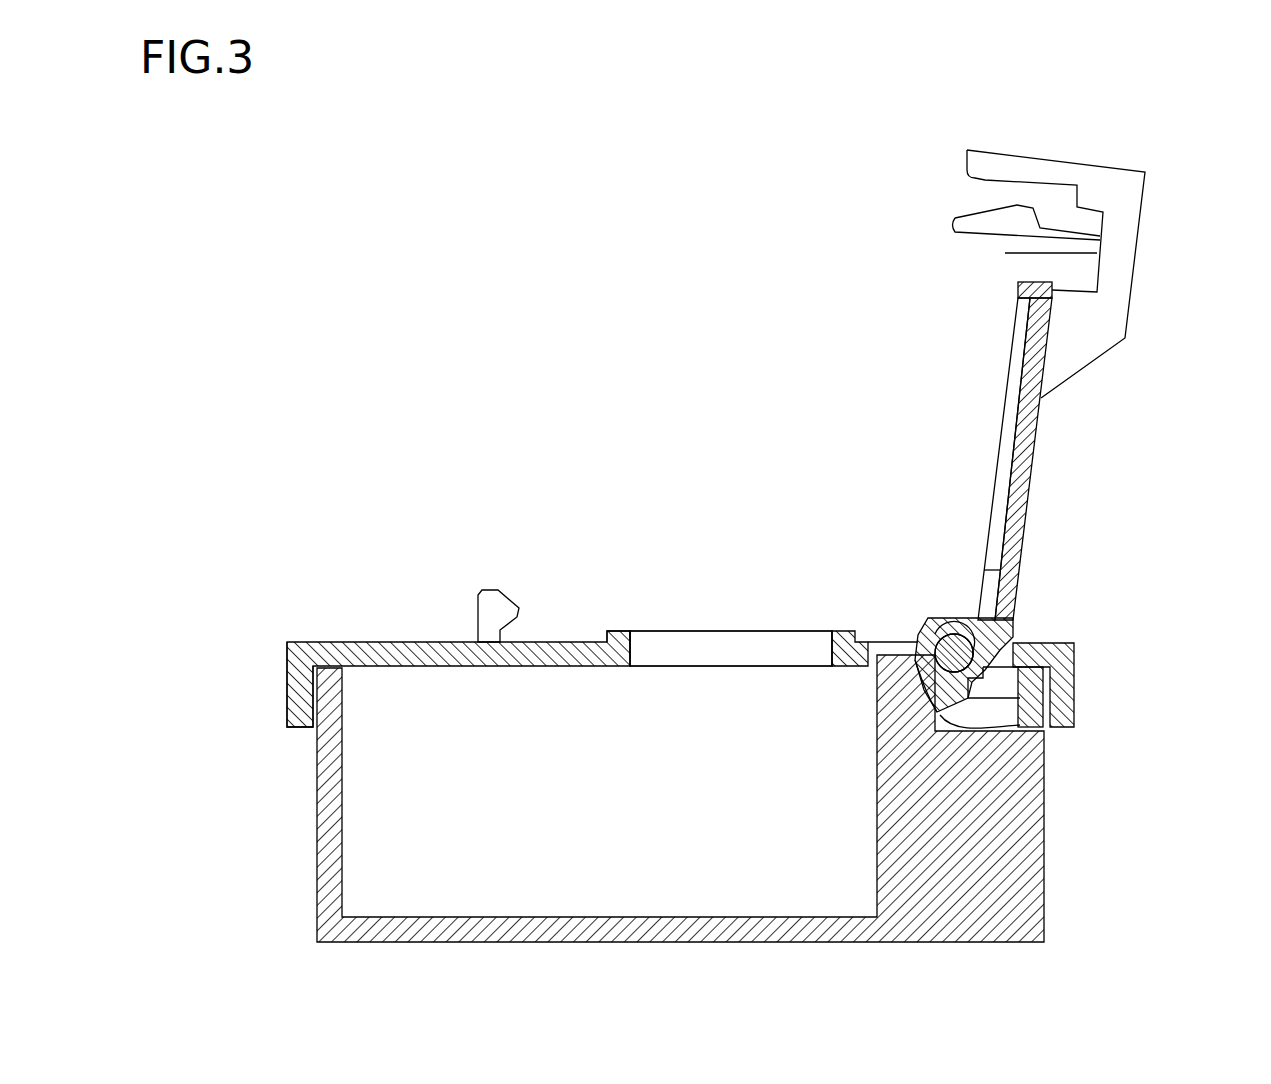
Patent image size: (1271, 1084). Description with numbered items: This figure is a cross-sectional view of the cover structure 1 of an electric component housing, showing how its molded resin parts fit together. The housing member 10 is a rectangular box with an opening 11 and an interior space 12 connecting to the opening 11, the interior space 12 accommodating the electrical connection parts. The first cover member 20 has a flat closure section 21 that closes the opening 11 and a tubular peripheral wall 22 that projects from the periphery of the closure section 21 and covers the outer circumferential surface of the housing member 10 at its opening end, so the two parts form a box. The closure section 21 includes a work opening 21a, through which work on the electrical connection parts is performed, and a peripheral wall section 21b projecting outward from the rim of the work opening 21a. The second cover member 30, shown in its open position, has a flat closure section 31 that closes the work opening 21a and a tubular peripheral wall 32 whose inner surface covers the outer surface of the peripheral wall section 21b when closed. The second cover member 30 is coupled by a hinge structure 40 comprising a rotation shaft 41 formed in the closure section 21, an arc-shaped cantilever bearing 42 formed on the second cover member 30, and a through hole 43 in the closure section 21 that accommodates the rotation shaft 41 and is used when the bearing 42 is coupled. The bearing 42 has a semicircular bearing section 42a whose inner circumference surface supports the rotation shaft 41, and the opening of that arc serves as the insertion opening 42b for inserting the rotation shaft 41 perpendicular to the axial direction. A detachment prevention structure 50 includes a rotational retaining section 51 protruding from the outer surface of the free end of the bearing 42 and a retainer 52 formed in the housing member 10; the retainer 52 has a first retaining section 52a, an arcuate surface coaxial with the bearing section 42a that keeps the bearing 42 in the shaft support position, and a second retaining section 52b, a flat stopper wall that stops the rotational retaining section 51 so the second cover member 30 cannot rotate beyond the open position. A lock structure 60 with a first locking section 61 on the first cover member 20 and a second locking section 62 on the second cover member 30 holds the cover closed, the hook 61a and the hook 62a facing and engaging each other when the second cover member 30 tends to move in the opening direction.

The cover structure 1 is at (590, 150).
The housing member 10 is at (302, 828).
The opening 11 is at (457, 677).
The interior space 12 is at (765, 760).
The first cover member 20 is at (253, 648).
The closure section 21 is at (382, 641).
The work opening 21a is at (683, 647).
The peripheral wall section 21b is at (603, 637).
The peripheral wall 22 is at (287, 705).
The second cover member 30 is at (968, 385).
The closure section 31 is at (1035, 466).
The peripheral wall 32 is at (1037, 280).
The hinge structure 40 is at (952, 598).
The rotation shaft 41 is at (1017, 647).
The bearing 42 is at (963, 603).
The bearing section 42a is at (942, 622).
The insertion opening 42b is at (1000, 650).
The through hole 43 is at (897, 645).
The detachment prevention structure 50 is at (1016, 646).
The rotational retaining section 51 is at (1040, 728).
The retainer 52 is at (1016, 646).
The first retaining section 52a is at (915, 665).
The second retaining section 52b is at (953, 713).
The lock structure 60 is at (811, 335).
The first locking section 61 is at (533, 524).
The hook 61a is at (520, 617).
The second locking section 62 is at (1049, 213).
The hook 62a is at (1040, 220).